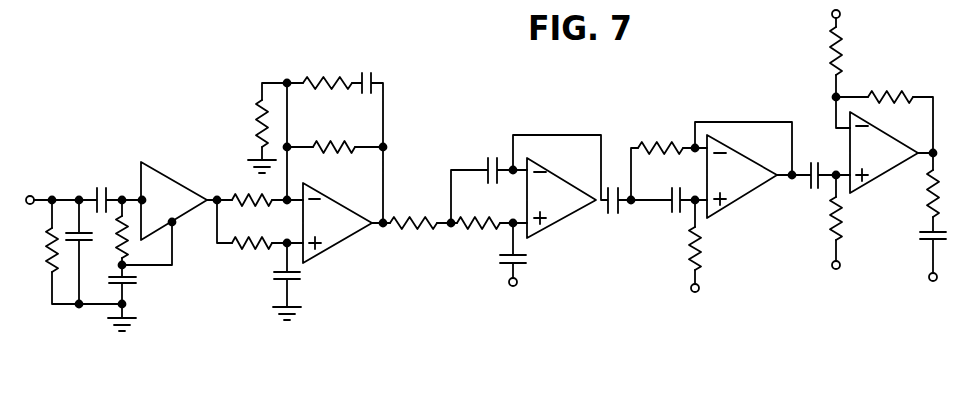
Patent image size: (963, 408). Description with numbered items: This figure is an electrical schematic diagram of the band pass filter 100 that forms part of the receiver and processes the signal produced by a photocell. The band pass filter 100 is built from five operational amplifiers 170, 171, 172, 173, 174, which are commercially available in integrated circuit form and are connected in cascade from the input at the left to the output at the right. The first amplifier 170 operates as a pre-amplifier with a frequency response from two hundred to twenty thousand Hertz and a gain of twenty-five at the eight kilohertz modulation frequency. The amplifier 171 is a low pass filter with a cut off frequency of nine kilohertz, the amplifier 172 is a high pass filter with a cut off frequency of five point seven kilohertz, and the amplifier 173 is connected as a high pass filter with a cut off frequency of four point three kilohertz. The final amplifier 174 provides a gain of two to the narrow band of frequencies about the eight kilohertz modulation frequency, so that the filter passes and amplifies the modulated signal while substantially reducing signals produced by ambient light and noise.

The band pass filter 100 is at (350, 348).
The operational amplifier 170 is at (182, 207).
The operational amplifier 171 is at (344, 231).
The operational amplifier 172 is at (565, 206).
The operational amplifier 173 is at (744, 182).
The operational amplifier 174 is at (887, 162).